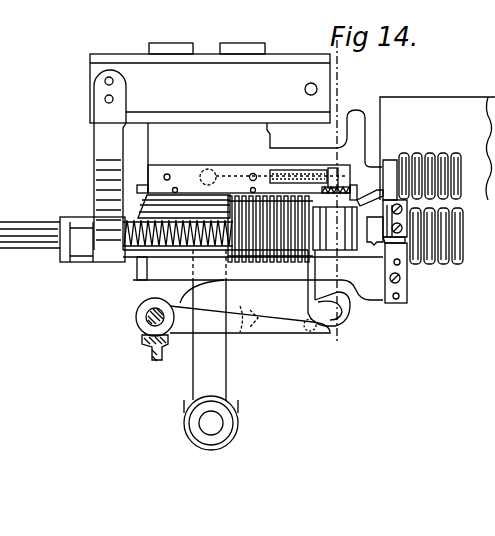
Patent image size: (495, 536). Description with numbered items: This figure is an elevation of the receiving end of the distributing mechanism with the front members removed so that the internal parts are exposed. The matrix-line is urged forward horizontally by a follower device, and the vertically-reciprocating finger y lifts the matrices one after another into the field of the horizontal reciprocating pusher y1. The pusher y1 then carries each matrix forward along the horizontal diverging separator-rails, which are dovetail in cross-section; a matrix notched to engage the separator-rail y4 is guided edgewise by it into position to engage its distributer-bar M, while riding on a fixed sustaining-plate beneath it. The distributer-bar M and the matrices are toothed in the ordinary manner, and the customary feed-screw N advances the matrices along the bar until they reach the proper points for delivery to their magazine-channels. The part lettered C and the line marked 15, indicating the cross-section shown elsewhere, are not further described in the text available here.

The distributer-bar M is at (470, 100).
The feed-screw N is at (478, 200).
The separator-rail y4 is at (382, 165).
The pusher y1 is at (352, 184).
The carriage block C is at (318, 230).
The finger y is at (312, 292).
The link bar 15 is at (333, 335).